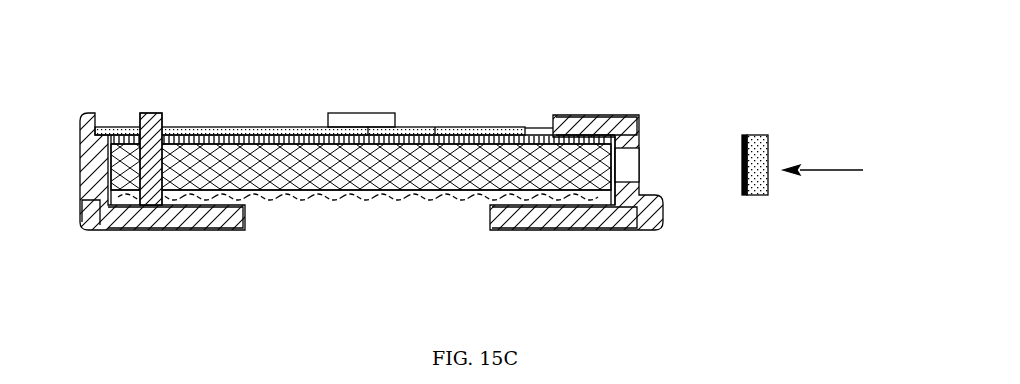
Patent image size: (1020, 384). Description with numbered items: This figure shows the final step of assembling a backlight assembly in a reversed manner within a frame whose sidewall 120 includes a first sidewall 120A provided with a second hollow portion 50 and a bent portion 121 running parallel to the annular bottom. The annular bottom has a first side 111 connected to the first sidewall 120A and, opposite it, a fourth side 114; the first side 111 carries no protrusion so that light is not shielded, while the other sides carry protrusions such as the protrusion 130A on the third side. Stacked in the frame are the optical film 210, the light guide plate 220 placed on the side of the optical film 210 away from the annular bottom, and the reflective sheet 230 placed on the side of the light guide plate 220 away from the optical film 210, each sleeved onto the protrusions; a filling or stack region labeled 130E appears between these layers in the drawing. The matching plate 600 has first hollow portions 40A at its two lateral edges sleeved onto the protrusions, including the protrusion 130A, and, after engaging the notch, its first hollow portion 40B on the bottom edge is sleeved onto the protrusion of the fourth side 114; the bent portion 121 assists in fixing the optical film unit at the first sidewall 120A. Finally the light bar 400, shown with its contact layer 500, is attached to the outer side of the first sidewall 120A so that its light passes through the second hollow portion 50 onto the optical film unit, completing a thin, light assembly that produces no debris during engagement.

The sidewall 120 is at (88, 170).
The optical film 210 is at (87, 210).
The fourth side 114 is at (148, 226).
The first sidewall 120A is at (645, 138).
The bent portion 121 is at (607, 123).
The second hollow portion 50 is at (633, 158).
The first side 111 is at (587, 222).
The light guide plate 220 is at (102, 140).
The filling layer 130E is at (165, 165).
The matching plate 600 is at (243, 127).
The first hollow portion 40A is at (427, 127).
The protrusion 130A is at (345, 118).
The reflective sheet 230 is at (540, 127).
The first hollow portion 40B is at (143, 112).
The contact plate 500 is at (744, 196).
The light bar 400 is at (762, 196).